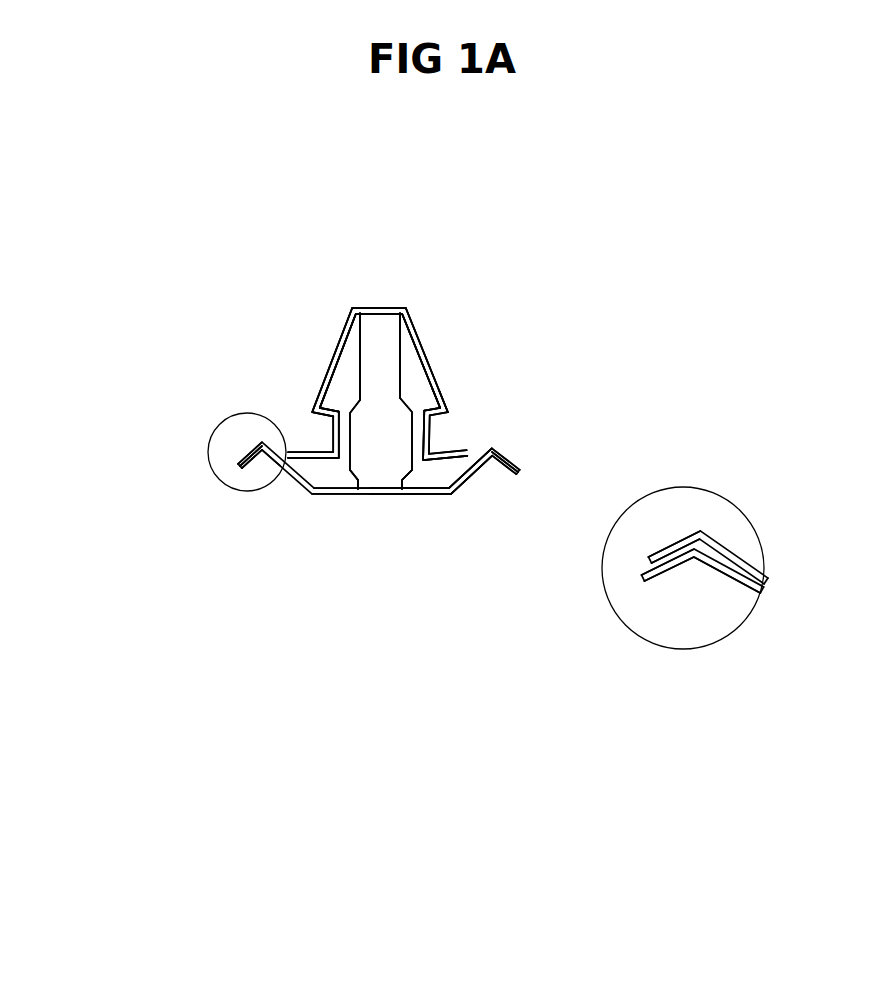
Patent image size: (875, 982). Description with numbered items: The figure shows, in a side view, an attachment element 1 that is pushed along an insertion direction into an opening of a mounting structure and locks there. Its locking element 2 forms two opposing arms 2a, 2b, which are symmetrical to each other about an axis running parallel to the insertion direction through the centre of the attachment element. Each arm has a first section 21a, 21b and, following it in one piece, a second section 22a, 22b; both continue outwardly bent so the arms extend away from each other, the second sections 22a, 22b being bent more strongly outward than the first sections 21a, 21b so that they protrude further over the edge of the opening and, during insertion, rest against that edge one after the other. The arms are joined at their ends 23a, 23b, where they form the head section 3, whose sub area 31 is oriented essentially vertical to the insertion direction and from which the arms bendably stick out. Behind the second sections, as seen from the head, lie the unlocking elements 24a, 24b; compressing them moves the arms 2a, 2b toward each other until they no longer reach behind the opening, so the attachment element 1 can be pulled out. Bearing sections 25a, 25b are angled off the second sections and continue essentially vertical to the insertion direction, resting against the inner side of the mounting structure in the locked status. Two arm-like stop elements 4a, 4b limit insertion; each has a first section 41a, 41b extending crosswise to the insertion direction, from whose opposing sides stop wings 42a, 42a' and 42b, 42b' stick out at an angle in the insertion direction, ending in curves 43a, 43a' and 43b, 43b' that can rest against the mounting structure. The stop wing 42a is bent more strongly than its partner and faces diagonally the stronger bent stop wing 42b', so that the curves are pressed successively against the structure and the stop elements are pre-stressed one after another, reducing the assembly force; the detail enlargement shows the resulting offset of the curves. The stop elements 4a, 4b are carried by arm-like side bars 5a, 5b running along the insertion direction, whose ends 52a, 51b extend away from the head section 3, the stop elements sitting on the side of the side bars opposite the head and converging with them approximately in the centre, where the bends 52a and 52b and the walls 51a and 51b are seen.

The attachment element 1 is at (353, 297).
The locking element 2 is at (322, 350).
The arm 2a is at (418, 330).
The arm 2b is at (334, 346).
The head section 3 is at (374, 305).
The sub area 31 is at (390, 305).
The side bar 5a is at (410, 365).
The side bar 5b is at (398, 408).
The first section 21a is at (426, 338).
The first section 21b is at (313, 355).
The second section 22a is at (432, 408).
The second section 22b is at (318, 410).
The end 23a is at (406, 310).
The end 23b is at (349, 311).
The unlocking element 24a is at (467, 452).
The unlocking element 24b is at (300, 470).
The bearing section 25a is at (448, 408).
The bearing section 25b is at (318, 425).
The stop element 4a is at (333, 494).
The stop element 4b is at (357, 494).
The first section 41a is at (430, 496).
The first section 41b is at (403, 494).
The stop wing 42a is at (535, 434).
The stop wing 42b is at (491, 522).
The curve 43a is at (504, 432).
The curve 43b is at (503, 486).
The stop wing 42a' is at (478, 572).
The stop wing 42b' is at (460, 506).
The curve 43a' is at (437, 570).
The curve 43b' is at (446, 494).
The first inner element wall 51a is at (389, 315).
The end 51b is at (404, 312).
The end 52a is at (403, 480).
The second inner element foot bend 52b is at (359, 482).